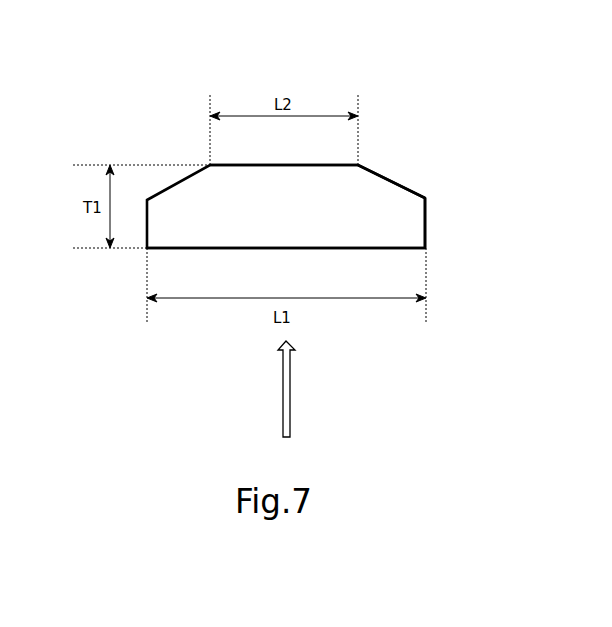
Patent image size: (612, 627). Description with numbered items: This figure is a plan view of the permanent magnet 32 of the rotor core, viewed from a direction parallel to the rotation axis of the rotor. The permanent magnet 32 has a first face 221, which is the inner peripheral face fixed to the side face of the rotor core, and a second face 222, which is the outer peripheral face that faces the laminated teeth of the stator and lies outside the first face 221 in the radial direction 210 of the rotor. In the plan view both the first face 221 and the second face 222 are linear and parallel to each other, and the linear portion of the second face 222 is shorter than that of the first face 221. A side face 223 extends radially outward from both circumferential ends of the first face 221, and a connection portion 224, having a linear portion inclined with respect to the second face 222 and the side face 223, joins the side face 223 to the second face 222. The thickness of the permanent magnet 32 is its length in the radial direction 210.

The permanent magnet 32 is at (408, 95).
The first face 221 is at (312, 250).
The second face 222 is at (291, 165).
The side face 223 is at (427, 217).
The connection portion 224 is at (392, 178).
The radial direction 210 is at (291, 387).